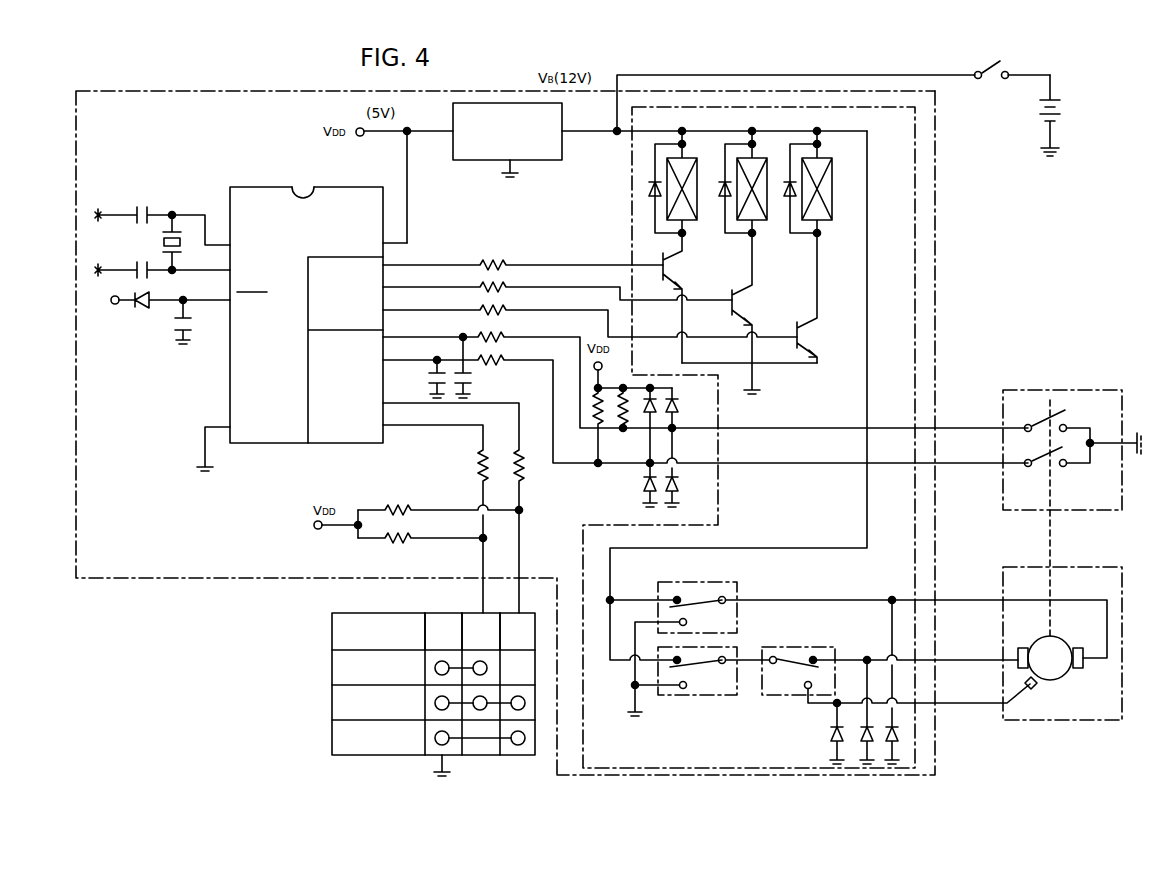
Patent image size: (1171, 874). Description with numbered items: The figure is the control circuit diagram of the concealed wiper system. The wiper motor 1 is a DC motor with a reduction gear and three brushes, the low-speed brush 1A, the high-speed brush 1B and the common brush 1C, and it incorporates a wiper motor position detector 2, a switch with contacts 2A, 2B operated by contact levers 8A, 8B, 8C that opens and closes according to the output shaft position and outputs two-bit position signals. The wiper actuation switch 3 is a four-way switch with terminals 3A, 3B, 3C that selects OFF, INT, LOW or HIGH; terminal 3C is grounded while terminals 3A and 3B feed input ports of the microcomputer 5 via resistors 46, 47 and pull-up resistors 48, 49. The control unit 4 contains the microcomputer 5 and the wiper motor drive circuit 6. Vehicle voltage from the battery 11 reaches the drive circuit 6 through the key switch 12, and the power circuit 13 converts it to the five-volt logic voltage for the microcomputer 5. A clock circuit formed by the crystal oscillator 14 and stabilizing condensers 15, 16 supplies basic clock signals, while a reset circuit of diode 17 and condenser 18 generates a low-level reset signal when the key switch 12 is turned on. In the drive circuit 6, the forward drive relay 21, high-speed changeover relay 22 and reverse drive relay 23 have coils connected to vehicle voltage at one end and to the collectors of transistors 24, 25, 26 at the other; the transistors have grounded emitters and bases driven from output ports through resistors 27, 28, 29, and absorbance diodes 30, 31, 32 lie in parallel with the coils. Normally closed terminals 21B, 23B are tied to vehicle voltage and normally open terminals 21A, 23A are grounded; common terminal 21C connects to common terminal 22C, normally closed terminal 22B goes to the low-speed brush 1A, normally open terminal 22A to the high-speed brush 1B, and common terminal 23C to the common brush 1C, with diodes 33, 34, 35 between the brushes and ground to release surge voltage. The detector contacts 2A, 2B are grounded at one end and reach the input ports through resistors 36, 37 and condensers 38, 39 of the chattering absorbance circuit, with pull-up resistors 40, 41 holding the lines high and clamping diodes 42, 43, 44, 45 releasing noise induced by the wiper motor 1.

The wiper motor 1 is at (1122, 640).
The low-speed brush 1A is at (1022, 646).
The high-speed brush 1B is at (1036, 688).
The common brush 1C is at (1078, 646).
The wiper motor position detector 2 is at (1110, 388).
The contact 2A is at (1052, 415).
The contact 2B is at (1040, 457).
The wiper actuation switch 3 is at (332, 738).
The terminal 3A is at (530, 612).
The terminal 3B is at (470, 612).
The terminal 3C is at (430, 612).
The control unit 4 is at (233, 91).
The microcomputer 5 is at (238, 186).
The wiper motor drive circuit 6 is at (935, 292).
The contact lever 8A is at (1022, 423).
The contact lever 8B is at (1022, 470).
The contact lever 8C is at (1093, 447).
The battery 11 is at (1062, 110).
The key switch 12 is at (990, 80).
The power circuit 13 is at (552, 160).
The crystal oscillator 14 is at (176, 230).
The condenser 15 is at (140, 208).
The condenser 16 is at (140, 262).
The diode 17 is at (142, 306).
The condenser 18 is at (175, 324).
The forward drive relay 21 is at (692, 160).
The normally open terminal 21A is at (683, 689).
The normally closed terminal 21B is at (672, 663).
The common terminal 21C is at (726, 657).
The high-speed changeover relay 22 is at (762, 160).
The normally open terminal 22A is at (807, 692).
The normally closed terminal 22B is at (818, 657).
The common terminal 22C is at (778, 656).
The reverse drive relay 23 is at (826, 160).
The normally open terminal 23A is at (680, 620).
The normally closed terminal 23B is at (677, 597).
The common terminal 23C is at (727, 597).
The transistor 24 is at (672, 264).
The transistor 25 is at (742, 302).
The transistor 26 is at (808, 330).
The resistor 27 is at (515, 262).
The resistor 28 is at (515, 284).
The resistor 29 is at (515, 308).
The absorbance diode 30 is at (652, 200).
The absorbance diode 31 is at (720, 200).
The absorbance diode 32 is at (786, 200).
The diode 33 is at (870, 748).
The diode 34 is at (840, 748).
The diode 35 is at (895, 748).
The resistor 36 is at (512, 334).
The resistor 37 is at (512, 358).
The condenser 38 is at (470, 378).
The condenser 39 is at (444, 365).
The pull-up resistor 40 is at (626, 418).
The pull-up resistor 41 is at (594, 405).
The clamping diode 42 is at (680, 406).
The clamping diode 43 is at (676, 484).
The clamping diode 44 is at (656, 418).
The clamping diode 45 is at (644, 485).
The resistor 46 is at (524, 470).
The resistor 47 is at (488, 470).
The pull-up resistor 48 is at (408, 505).
The pull-up resistor 49 is at (405, 542).